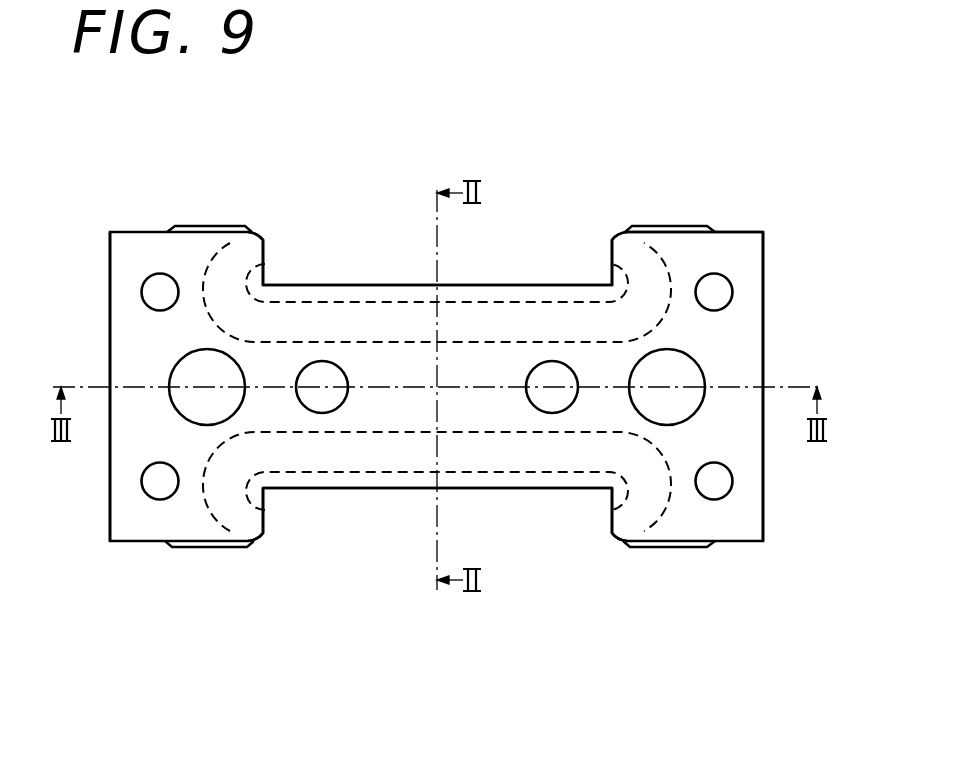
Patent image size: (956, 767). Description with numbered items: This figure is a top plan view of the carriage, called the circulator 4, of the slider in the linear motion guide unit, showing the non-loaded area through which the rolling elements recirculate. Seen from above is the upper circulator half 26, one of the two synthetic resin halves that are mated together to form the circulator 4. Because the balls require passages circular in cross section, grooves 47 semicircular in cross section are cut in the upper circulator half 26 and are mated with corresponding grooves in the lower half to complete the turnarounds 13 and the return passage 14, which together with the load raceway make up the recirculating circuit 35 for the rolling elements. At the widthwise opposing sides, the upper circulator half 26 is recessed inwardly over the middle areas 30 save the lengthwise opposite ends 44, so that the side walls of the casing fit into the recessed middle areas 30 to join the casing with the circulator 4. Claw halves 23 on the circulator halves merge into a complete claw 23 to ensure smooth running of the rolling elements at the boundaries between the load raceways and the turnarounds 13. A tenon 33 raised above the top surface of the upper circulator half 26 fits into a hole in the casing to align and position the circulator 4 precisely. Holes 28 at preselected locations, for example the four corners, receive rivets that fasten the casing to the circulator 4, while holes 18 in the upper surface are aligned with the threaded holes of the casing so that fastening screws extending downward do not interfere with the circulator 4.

The carriage 4 is at (301, 242).
The turnarounds 13 is at (225, 245).
The return passage 14 is at (533, 317).
The holes 18 is at (190, 375).
The claw 23 is at (628, 227).
The upper circulator half 26 is at (738, 230).
The holes 28 is at (160, 280).
The middle areas 30 is at (413, 284).
The tenon 33 is at (322, 402).
The recirculating circuit 35 is at (373, 325).
The lengthwise opposite ends 44 is at (127, 433).
The grooves 47 is at (480, 333).